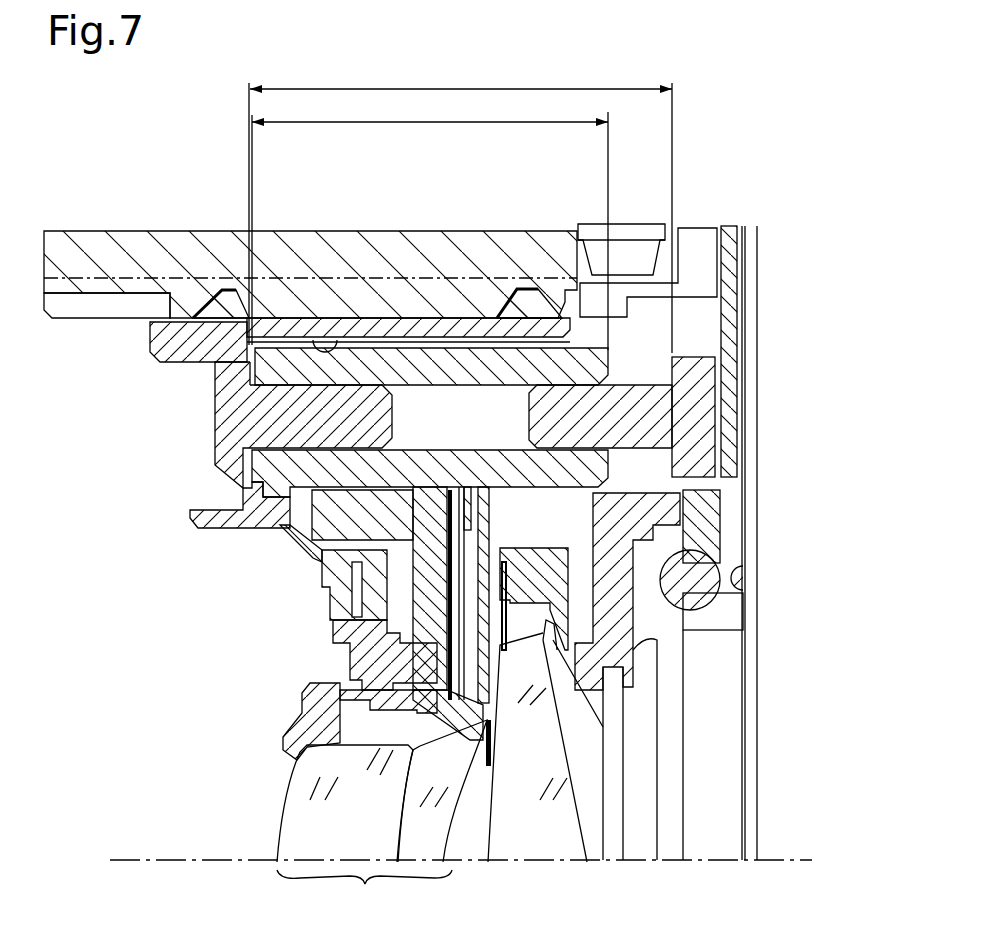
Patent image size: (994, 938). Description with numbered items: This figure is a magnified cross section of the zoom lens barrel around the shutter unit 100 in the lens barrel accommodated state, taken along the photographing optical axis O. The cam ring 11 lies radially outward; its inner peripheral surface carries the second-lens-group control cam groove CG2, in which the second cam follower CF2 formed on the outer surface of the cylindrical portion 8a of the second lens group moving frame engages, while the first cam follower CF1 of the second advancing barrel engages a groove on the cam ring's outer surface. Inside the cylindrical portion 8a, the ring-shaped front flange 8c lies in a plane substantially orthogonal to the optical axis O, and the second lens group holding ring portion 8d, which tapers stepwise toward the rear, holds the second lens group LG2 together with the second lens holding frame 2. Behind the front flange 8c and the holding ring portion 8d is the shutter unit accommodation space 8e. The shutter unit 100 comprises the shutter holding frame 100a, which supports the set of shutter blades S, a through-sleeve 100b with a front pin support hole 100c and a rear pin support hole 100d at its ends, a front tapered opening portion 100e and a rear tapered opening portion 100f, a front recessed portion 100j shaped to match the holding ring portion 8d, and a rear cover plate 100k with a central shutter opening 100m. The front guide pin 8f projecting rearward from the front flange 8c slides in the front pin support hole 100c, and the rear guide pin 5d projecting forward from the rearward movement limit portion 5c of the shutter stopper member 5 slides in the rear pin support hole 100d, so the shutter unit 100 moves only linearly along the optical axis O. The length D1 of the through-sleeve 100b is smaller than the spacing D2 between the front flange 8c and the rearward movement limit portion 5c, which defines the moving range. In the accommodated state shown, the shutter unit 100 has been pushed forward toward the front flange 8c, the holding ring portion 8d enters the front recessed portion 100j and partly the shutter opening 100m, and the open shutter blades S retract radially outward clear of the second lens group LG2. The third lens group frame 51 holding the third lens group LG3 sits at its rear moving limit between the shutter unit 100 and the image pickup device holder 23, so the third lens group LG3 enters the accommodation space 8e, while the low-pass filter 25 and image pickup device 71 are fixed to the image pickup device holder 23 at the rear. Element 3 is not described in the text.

The cam ring 11 is at (75, 245).
The second-lens-group control cam groove CG2 is at (203, 313).
The second cam follower CF2 is at (230, 290).
The cylindrical portion 8a is at (300, 327).
The shutter unit accommodation space 8e is at (340, 347).
The first cam follower CF1 is at (635, 257).
The shutter stopper member 5 is at (700, 345).
The image pickup device holder 23 is at (733, 380).
The rearward movement limit portion 5c is at (692, 417).
The rear guide pin 5d is at (625, 425).
The tapered opening portion 100f is at (600, 447).
The third lens group frame 51 is at (540, 578).
The rear cover plate 100k is at (483, 662).
The shutter opening 100m is at (487, 715).
The holding ring 3 is at (160, 345).
The through-sleeve 100b is at (287, 365).
The front guide pin 8f is at (330, 412).
The front flange 8c is at (222, 438).
The front pin support hole 100c is at (252, 445).
The tapered opening portion 100e is at (243, 488).
The shutter holding frame 100a is at (433, 507).
The shutter unit 100 is at (413, 552).
The front recessed portion 100j is at (432, 585).
The second lens group holding ring portion 8d is at (413, 667).
The second lens holding frame 2 is at (353, 692).
The shutter blades S is at (463, 530).
The rear pin support hole 100d is at (537, 395).
The photographing optical axis O is at (177, 860).
The second lens group LG2 is at (382, 815).
The third lens group LG3 is at (543, 845).
The low-pass filter 25 is at (613, 845).
The image pickup device 71 is at (675, 845).
The length of the through-sleeve D1 is at (430, 223).
The spacing between the front flange and the rearward movement limit portion D2 is at (460, 208).